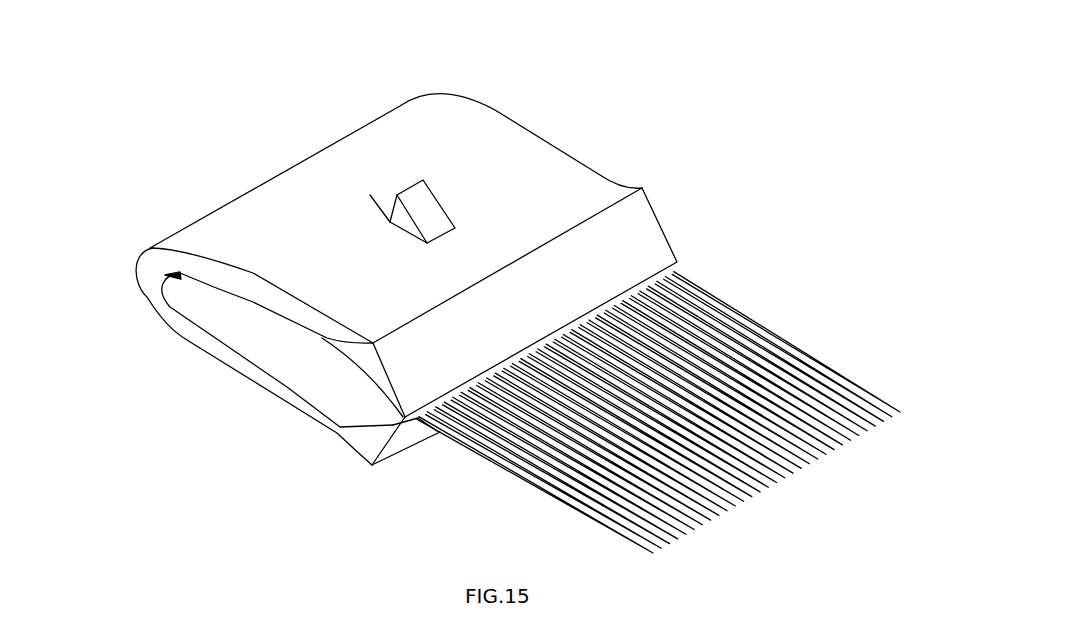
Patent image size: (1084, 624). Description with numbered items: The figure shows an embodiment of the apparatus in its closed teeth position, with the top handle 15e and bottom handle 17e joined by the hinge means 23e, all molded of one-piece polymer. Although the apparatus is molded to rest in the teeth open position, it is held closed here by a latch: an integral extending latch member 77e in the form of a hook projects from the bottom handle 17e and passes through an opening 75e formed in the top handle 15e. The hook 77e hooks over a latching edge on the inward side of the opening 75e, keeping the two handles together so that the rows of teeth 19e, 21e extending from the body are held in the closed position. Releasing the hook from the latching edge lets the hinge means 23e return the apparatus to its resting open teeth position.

The top handle 15e is at (498, 143).
The bottom handle 17e is at (273, 395).
The hinge means 23e is at (157, 268).
The opening 75e is at (383, 210).
The latch member 77e is at (417, 198).
The comb teeth 19e is at (677, 386).
The comb teeth tips 21e is at (797, 345).